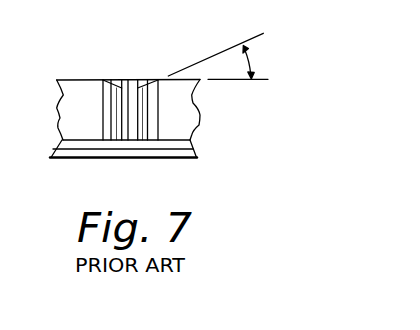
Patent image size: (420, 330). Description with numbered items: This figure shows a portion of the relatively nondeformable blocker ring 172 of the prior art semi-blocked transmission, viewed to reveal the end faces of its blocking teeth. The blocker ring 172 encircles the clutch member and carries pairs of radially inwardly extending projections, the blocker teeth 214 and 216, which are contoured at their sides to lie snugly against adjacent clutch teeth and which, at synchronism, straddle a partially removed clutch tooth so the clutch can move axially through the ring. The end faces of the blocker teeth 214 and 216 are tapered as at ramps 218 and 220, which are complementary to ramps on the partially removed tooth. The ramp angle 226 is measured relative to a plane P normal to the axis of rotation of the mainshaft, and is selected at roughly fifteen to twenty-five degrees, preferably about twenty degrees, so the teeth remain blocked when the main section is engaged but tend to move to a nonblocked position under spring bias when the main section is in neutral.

The blocker ring 172 is at (209, 124).
The blocker tooth 216 is at (105, 94).
The taper 220 is at (118, 93).
The taper 218 is at (147, 80).
The blocker tooth 214 is at (148, 95).
The ramp angle 226 is at (250, 62).
The reference plane P is at (227, 81).